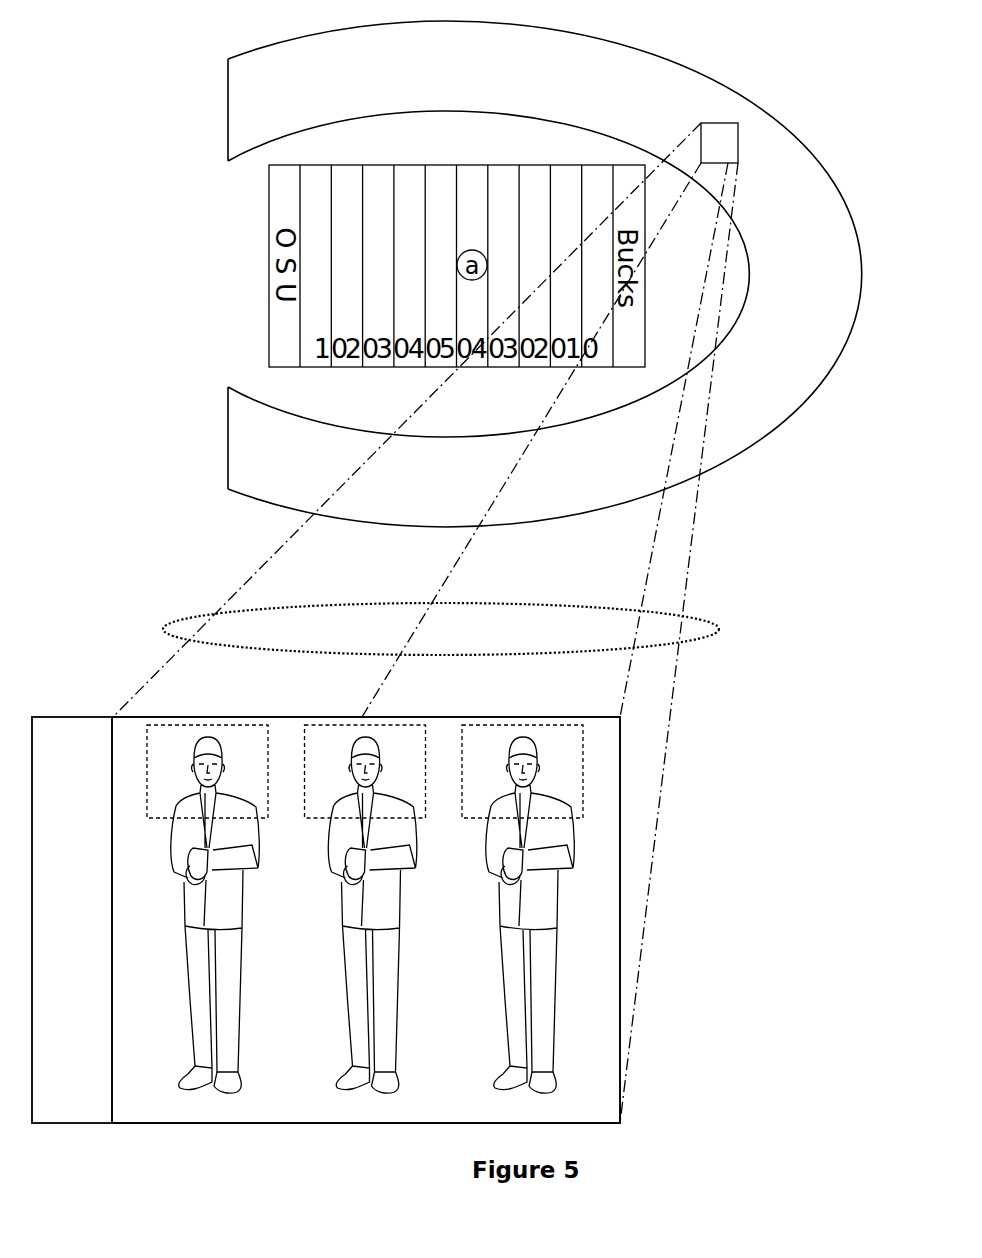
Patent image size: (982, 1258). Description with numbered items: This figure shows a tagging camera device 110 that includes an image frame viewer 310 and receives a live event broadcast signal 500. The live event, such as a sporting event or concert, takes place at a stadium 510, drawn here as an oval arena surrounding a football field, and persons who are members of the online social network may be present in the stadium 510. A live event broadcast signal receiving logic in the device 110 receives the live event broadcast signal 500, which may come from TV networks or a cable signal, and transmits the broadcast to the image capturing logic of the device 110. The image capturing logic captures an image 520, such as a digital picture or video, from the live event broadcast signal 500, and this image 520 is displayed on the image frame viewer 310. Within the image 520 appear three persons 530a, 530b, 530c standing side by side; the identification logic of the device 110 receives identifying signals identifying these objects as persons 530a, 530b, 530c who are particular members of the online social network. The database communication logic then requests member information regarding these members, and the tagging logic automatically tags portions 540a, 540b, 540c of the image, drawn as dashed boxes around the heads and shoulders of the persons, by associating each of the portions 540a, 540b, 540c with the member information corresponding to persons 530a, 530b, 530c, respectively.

The stadium 510 is at (652, 63).
The live event broadcast signal 500 is at (722, 628).
The tagging camera device 110 is at (326, 920).
The image 520 is at (220, 1113).
The image frame viewer 310 is at (382, 1122).
The portion of image 540a is at (163, 820).
The portion of image 540b is at (320, 820).
The portion of image 540c is at (478, 820).
The person 530a is at (237, 968).
The person 530b is at (394, 968).
The person 530c is at (552, 968).